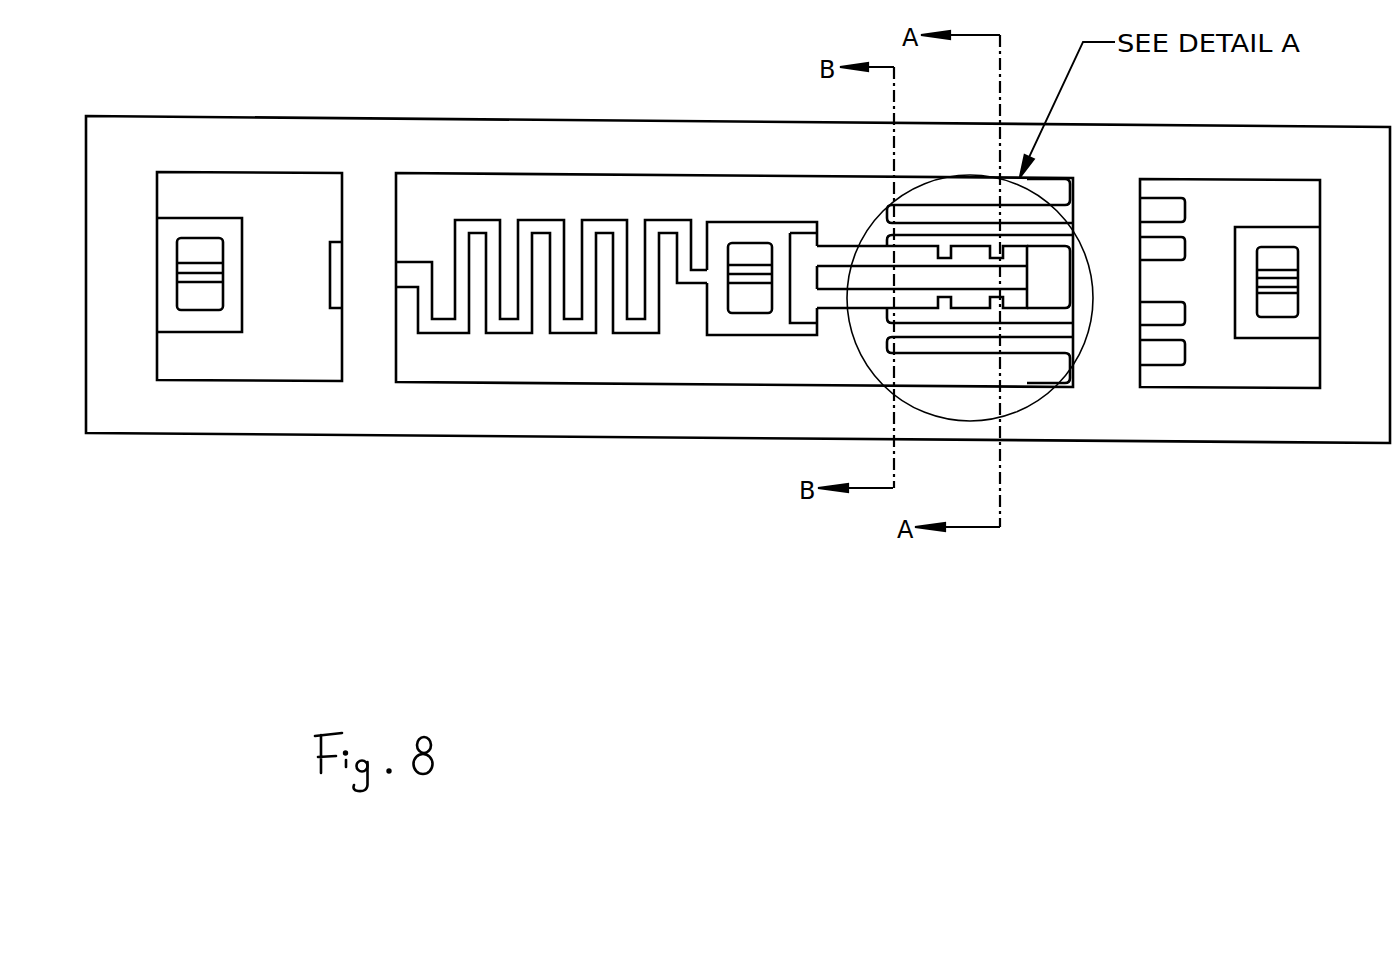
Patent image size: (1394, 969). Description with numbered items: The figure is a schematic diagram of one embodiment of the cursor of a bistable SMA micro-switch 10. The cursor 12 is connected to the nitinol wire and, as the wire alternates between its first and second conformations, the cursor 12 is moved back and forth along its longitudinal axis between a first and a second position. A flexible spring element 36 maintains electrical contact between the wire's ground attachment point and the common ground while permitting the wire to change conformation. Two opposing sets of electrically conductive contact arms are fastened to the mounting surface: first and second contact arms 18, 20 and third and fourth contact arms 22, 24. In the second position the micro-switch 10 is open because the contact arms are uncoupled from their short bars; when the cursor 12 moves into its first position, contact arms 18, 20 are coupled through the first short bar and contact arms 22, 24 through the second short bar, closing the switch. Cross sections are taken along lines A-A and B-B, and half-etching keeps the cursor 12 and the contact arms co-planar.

The SMA micro-switch 10 is at (641, 503).
The cursor 12 is at (851, 233).
The first contact arm 18 is at (928, 327).
The second contact arm 20 is at (918, 357).
The third contact arm 22 is at (980, 236).
The fourth contact arm 24 is at (986, 204).
The spring element 36 is at (577, 343).